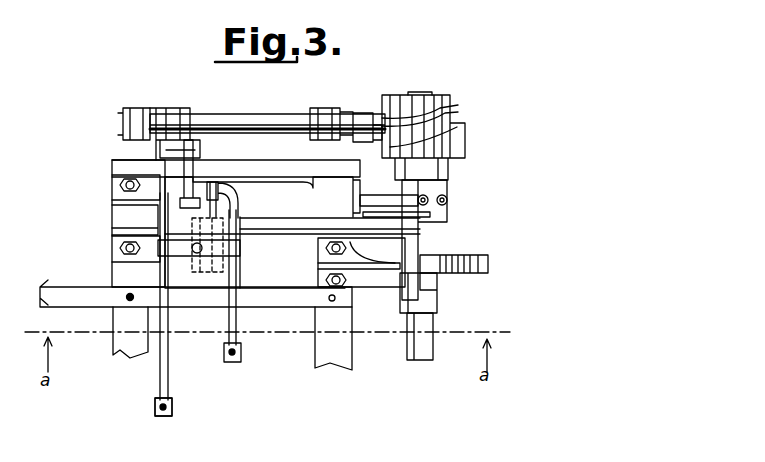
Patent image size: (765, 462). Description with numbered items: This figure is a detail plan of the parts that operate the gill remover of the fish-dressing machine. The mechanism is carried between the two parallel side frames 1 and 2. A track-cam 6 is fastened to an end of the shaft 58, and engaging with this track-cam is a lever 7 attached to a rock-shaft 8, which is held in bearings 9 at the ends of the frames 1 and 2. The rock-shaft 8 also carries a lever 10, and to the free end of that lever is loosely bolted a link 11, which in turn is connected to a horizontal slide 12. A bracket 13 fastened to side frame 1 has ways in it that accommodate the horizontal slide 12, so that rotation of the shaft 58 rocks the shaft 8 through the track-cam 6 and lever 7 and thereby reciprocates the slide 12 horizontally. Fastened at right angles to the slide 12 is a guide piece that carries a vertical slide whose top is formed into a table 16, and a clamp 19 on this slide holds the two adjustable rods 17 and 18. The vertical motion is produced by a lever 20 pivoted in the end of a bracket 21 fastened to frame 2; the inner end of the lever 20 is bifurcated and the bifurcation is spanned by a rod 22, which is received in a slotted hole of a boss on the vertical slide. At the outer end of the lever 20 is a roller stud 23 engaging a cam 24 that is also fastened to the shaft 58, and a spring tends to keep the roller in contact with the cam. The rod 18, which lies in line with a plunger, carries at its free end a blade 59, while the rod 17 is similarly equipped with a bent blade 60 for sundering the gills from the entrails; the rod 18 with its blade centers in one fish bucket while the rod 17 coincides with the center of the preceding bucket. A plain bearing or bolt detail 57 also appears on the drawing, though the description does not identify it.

The side frame 1 is at (128, 357).
The side frame 2 is at (338, 362).
The track-cam 6 is at (458, 104).
The lever 7 is at (383, 105).
The rock-shaft 8 is at (280, 113).
The bearings 9 is at (128, 108).
The lever 10 is at (200, 96).
The link 11 is at (197, 172).
The horizontal slide 12 is at (170, 305).
The bracket 13 is at (122, 222).
The table 16 is at (225, 268).
The adjustable rod 17 is at (238, 345).
The adjustable rod 18 is at (176, 390).
The clamp 19 is at (240, 248).
The lever 20 is at (268, 232).
The bracket 21 is at (368, 287).
The rod 22 is at (232, 192).
The roller stud 23 is at (458, 254).
The cam 24 is at (440, 278).
The bolts 57 is at (446, 215).
The shaft 58 is at (432, 352).
The blade 59 is at (156, 418).
The bent blade 60 is at (240, 362).